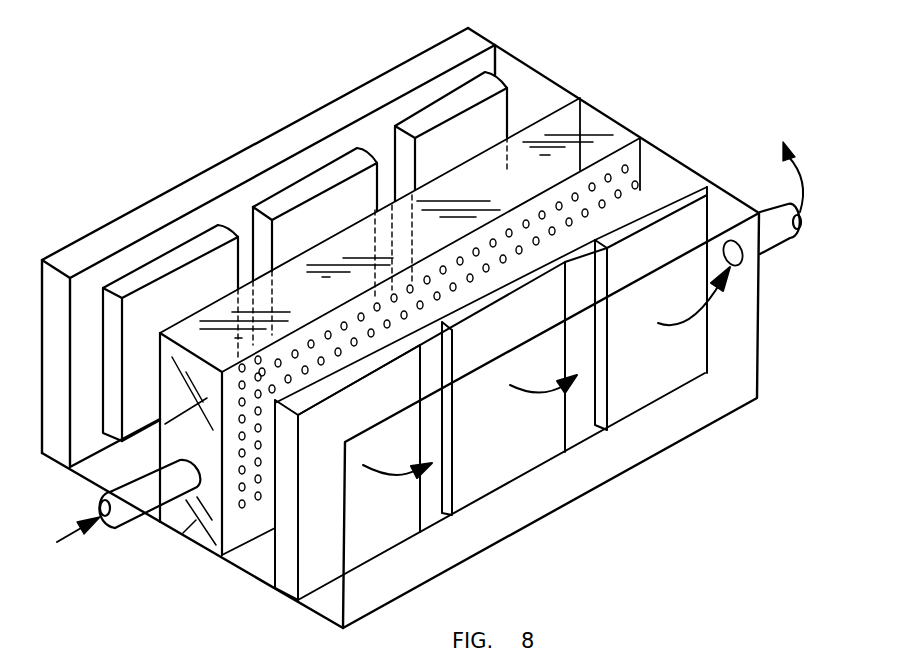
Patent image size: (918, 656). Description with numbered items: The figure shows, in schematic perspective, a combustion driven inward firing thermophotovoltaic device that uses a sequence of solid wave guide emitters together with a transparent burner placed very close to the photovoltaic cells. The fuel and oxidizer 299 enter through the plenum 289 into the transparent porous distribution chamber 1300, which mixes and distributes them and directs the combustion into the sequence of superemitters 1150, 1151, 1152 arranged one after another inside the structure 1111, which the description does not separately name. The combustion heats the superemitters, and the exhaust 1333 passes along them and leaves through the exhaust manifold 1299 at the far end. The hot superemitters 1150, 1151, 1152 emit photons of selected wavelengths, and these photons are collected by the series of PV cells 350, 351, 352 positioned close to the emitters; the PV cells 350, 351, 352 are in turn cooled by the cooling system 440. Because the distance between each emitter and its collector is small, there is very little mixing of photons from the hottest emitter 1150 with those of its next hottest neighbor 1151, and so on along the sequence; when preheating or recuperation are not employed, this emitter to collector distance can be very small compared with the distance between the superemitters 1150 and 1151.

The cooling system 440 is at (107, 233).
The PV cell 350 is at (190, 248).
The PV cell 351 is at (310, 183).
The PV cell 352 is at (430, 113).
The tank housing 1111 is at (592, 462).
The transparent porous distribution chamber 1300 is at (192, 527).
The plenum 289 is at (128, 515).
The fuel and oxidizer 299 is at (67, 537).
The superemitter 1150 is at (283, 577).
The superemitter 1151 is at (500, 472).
The superemitter 1152 is at (650, 395).
The exhaust manifold 1299 is at (780, 240).
The exhaust 1333 is at (723, 292).